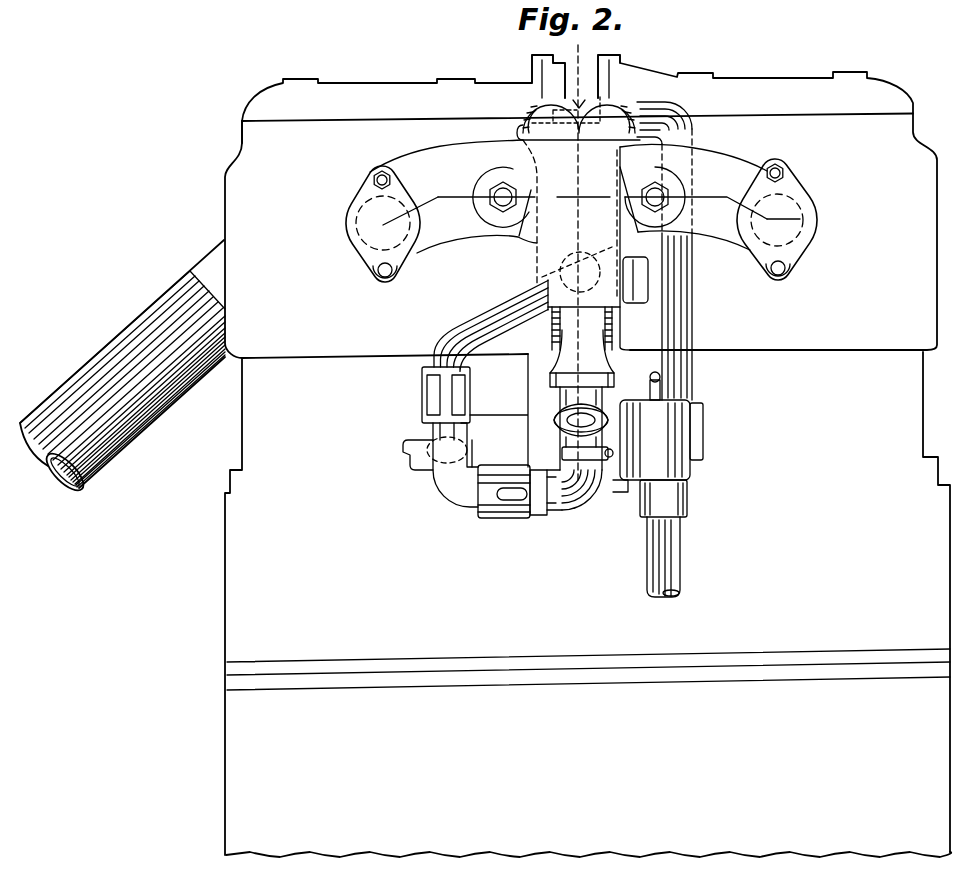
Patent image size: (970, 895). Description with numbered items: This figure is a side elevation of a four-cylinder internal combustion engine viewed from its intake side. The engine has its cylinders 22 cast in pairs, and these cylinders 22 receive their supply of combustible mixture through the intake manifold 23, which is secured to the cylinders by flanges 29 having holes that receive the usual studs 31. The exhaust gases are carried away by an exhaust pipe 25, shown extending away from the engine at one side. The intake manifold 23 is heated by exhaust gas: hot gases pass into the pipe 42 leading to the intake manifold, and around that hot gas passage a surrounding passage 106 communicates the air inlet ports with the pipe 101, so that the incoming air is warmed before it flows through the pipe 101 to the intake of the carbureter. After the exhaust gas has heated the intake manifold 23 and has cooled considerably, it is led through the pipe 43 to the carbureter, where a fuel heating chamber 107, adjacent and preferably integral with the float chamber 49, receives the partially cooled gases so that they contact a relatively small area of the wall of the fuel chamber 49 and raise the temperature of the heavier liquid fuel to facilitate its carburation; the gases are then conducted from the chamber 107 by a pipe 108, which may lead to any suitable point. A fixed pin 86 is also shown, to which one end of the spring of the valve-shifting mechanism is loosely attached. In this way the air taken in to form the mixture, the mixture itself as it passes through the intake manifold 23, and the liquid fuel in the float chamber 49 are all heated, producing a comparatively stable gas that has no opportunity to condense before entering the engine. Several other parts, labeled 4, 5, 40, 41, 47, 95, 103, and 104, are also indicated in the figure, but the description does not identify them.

The intake port 4 is at (380, 226).
The section line 5- 5 is at (586, 47).
The engine cylinders 22 is at (367, 88).
The intake manifold 23 is at (743, 152).
The exhaust pipe 25 is at (130, 330).
The flanges 29 is at (368, 182).
The studs 31 is at (381, 174).
The clamp stud 40 is at (575, 112).
The clamp stud 41 is at (597, 100).
The pipe 42 is at (525, 102).
The pipe 43 is at (660, 112).
The carburetor 47 is at (729, 465).
The float chamber 49 is at (673, 433).
The fixed pin 86 is at (697, 391).
The hose elbow 95 is at (565, 505).
The pipe 101 is at (480, 307).
The hose coupling 103 is at (497, 466).
The coupling slot 104 is at (518, 495).
The surrounding passage 106 is at (450, 403).
The fuel heating chamber 107 is at (462, 385).
The pipe 108 is at (673, 547).